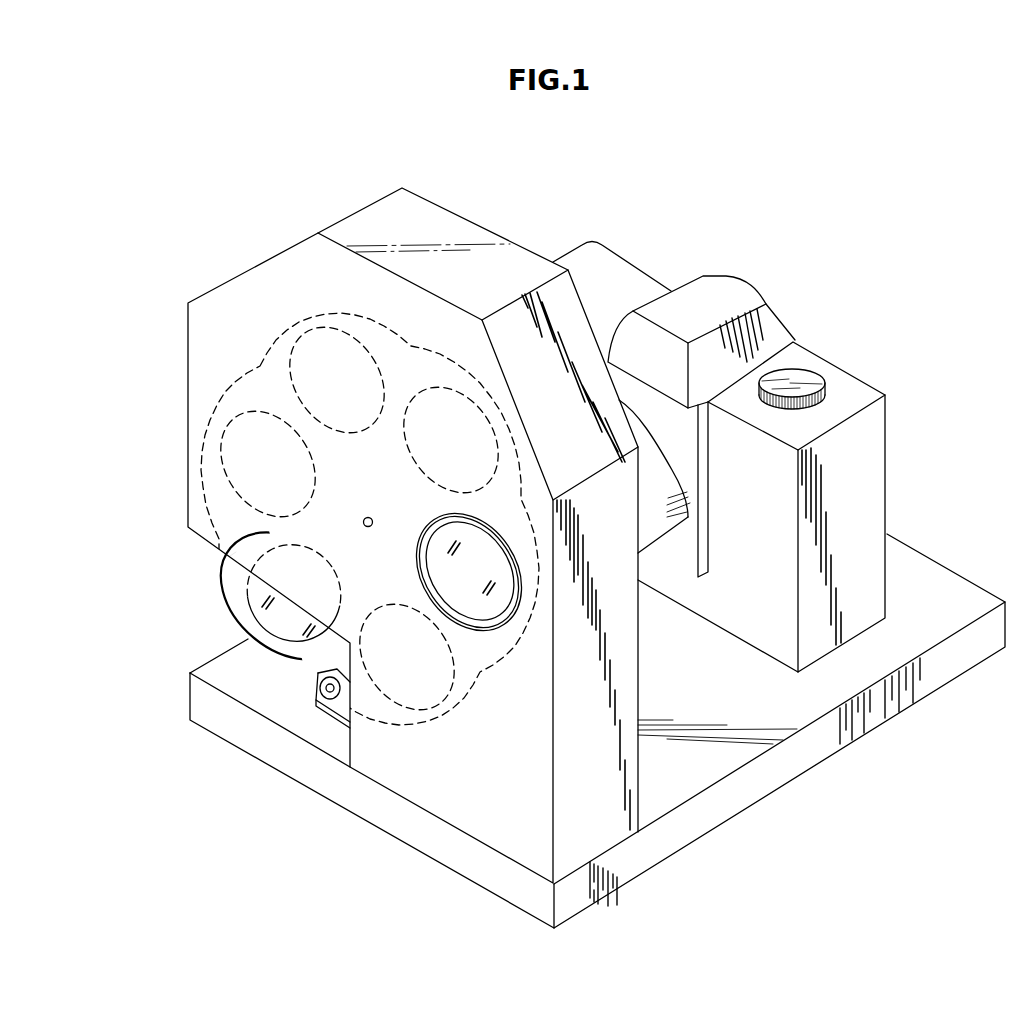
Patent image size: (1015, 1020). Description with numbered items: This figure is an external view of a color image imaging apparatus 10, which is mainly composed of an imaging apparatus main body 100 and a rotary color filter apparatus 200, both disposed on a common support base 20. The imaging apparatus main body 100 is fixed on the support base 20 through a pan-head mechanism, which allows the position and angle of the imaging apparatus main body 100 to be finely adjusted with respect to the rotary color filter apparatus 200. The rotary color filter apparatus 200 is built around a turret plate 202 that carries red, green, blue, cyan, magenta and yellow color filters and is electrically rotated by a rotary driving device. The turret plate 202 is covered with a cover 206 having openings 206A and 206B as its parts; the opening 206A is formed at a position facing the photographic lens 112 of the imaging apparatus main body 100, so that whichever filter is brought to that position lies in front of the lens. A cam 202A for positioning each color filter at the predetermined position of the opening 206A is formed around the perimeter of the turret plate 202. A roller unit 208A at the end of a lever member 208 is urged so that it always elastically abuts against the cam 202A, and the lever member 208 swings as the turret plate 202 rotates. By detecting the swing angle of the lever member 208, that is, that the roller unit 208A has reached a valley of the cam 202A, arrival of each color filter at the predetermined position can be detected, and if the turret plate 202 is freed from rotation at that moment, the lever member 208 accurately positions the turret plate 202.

The color image imaging apparatus 10 is at (697, 171).
The support base 20 is at (965, 606).
The imaging apparatus main body 100 is at (741, 278).
The photographic lens 112 is at (653, 517).
The rotary color filter apparatus 200 is at (475, 216).
The turret plate 202 is at (236, 592).
The cam 202A is at (252, 640).
The cover 206 is at (183, 362).
The opening 206A is at (467, 620).
The opening 206B is at (205, 548).
The lever member 208 is at (317, 702).
The roller unit 208A is at (318, 681).